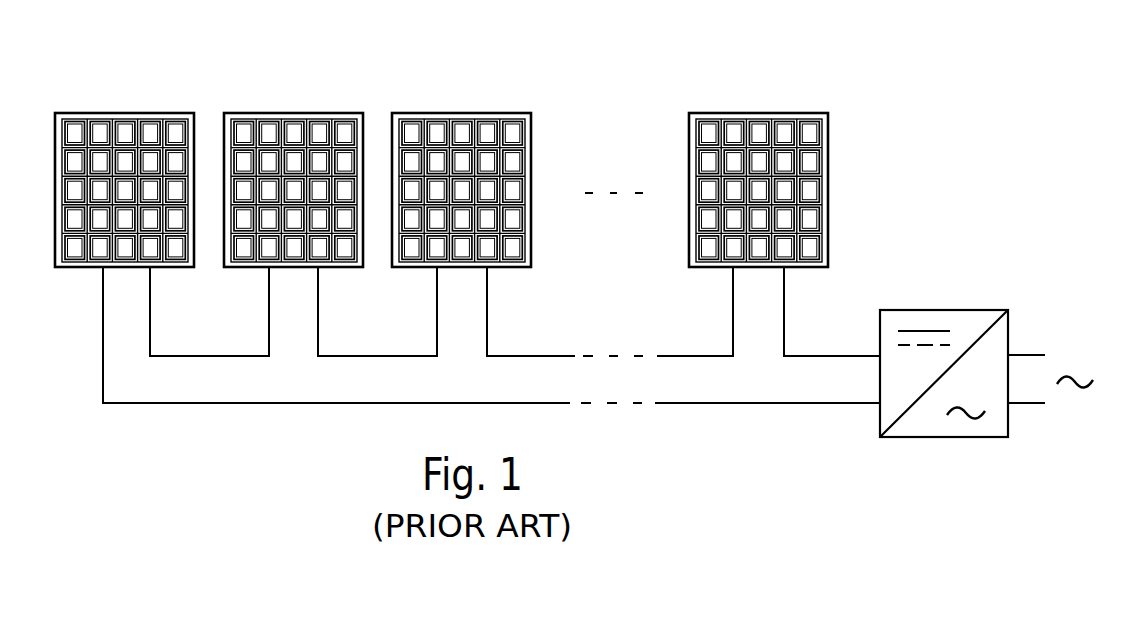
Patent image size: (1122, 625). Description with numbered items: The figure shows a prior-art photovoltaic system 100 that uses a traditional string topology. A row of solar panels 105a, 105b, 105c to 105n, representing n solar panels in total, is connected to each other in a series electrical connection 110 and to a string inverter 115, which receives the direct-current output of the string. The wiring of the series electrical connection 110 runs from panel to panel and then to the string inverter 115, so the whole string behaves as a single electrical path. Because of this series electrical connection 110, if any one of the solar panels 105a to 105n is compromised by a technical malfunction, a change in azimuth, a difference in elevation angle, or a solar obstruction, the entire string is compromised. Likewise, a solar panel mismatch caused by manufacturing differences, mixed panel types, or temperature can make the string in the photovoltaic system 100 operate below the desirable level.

The photovoltaic system 100 is at (83, 22).
The solar panel 105a is at (155, 113).
The solar panel 105b is at (330, 113).
The solar panel 105c is at (512, 113).
The solar panel 105n is at (808, 113).
The series electrical connection 110 is at (250, 403).
The string inverter 115 is at (968, 310).